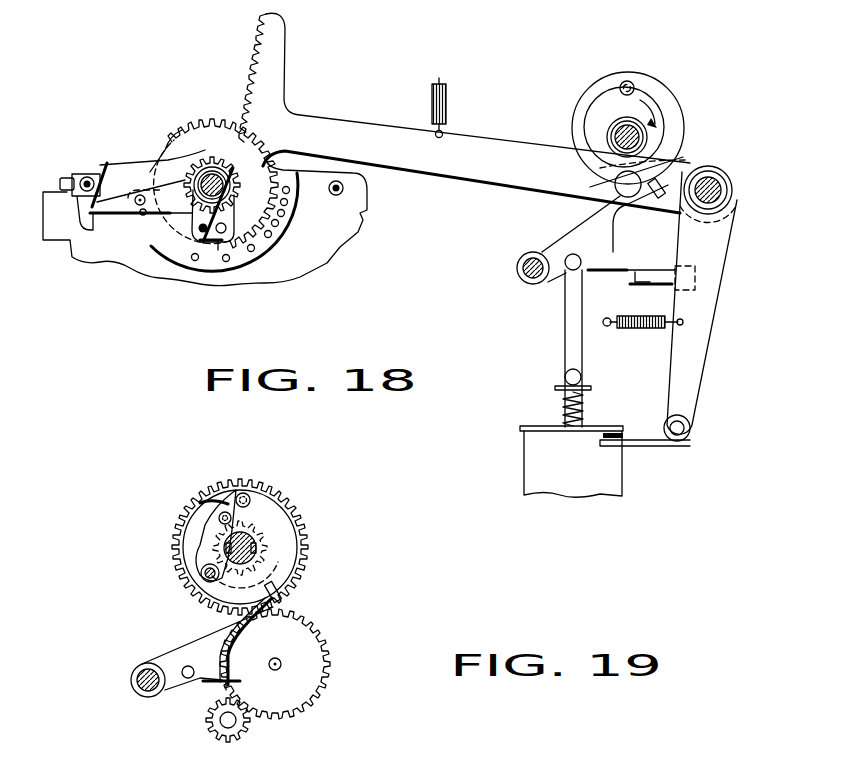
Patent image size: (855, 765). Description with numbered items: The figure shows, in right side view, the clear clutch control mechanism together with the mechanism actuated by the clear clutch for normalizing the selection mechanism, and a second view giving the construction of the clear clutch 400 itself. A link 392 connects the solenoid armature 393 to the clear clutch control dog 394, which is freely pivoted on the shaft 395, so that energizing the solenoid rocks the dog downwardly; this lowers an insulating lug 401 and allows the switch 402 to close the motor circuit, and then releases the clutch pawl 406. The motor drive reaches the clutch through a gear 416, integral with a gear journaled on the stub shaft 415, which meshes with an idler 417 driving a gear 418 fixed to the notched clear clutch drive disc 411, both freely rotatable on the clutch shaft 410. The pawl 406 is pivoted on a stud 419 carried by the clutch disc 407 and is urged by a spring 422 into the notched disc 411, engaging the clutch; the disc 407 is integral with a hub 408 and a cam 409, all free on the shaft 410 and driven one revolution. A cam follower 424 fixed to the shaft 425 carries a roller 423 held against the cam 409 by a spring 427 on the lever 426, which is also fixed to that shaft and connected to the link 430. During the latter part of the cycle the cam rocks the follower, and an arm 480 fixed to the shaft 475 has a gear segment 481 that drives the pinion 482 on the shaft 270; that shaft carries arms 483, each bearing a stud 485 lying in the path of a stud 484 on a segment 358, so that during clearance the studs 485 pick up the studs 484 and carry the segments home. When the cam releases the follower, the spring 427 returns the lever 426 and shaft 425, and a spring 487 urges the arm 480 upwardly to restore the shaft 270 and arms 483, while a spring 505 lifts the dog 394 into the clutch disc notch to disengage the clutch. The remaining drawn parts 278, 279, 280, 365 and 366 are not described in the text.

In FIG. 18, the link 278 is at (60, 183).
In FIG. 18, the pivot pin 279 is at (96, 172).
In FIG. 18, the frame 280 is at (113, 205).
In FIG. 18, the lever 365 is at (178, 182).
In FIG. 18, the pinion 482 is at (182, 150).
In FIG. 18, the shaft 270 is at (212, 171).
In FIG. 18, the segment 358 is at (212, 118).
In FIG. 18, the gear segment 481 is at (250, 78).
In FIG. 18, the arm 480 is at (470, 172).
In FIG. 18, the arm 483 is at (196, 226).
In FIG. 18, the stud 485 is at (208, 240).
In FIG. 18, the stud 484 is at (221, 234).
In FIG. 18, the sector plate 366 is at (258, 238).
In FIG. 18, the spring 487 is at (432, 104).
In FIG. 18, the clear clutch 400 is at (627, 74).
In FIG. 19, the clear clutch 400 is at (242, 474).
In FIG. 18, the clutch disc 407 is at (675, 97).
In FIG. 19, the clutch disc 407 is at (272, 505).
In FIG. 18, the cam 409 is at (606, 95).
In FIG. 18, the hub 408 is at (612, 137).
In FIG. 18, the clutch shaft 410 is at (614, 130).
In FIG. 19, the clutch shaft 410 is at (258, 543).
In FIG. 18, the roller 423 is at (614, 188).
In FIG. 18, the cam follower 424 is at (660, 210).
In FIG. 18, the shaft 425 is at (734, 192).
In FIG. 18, the shaft 475 is at (735, 208).
In FIG. 18, the lever 426 is at (698, 346).
In FIG. 18, the link 430 is at (641, 440).
In FIG. 18, the clear clutch control dog 394 is at (548, 252).
In FIG. 19, the clear clutch control dog 394 is at (178, 652).
In FIG. 18, the shaft 395 is at (535, 282).
In FIG. 19, the shaft 395 is at (133, 680).
In FIG. 18, the link 392 is at (565, 345).
In FIG. 18, the solenoid armature 393 is at (562, 390).
In FIG. 18, the spring 505 is at (563, 402).
In FIG. 18, the lug 401 is at (610, 274).
In FIG. 18, the switch 402 is at (660, 276).
In FIG. 18, the spring 427 is at (642, 328).
In FIG. 19, the gear 418 is at (292, 518).
In FIG. 19, the clear clutch drive disc 411 is at (270, 553).
In FIG. 19, the clutch pawl 406 is at (200, 545).
In FIG. 19, the spring 422 is at (200, 506).
In FIG. 19, the stud 419 is at (205, 578).
In FIG. 19, the idler 417 is at (320, 640).
In FIG. 19, the stub shaft 415 is at (212, 730).
In FIG. 19, the gear 416 is at (252, 736).